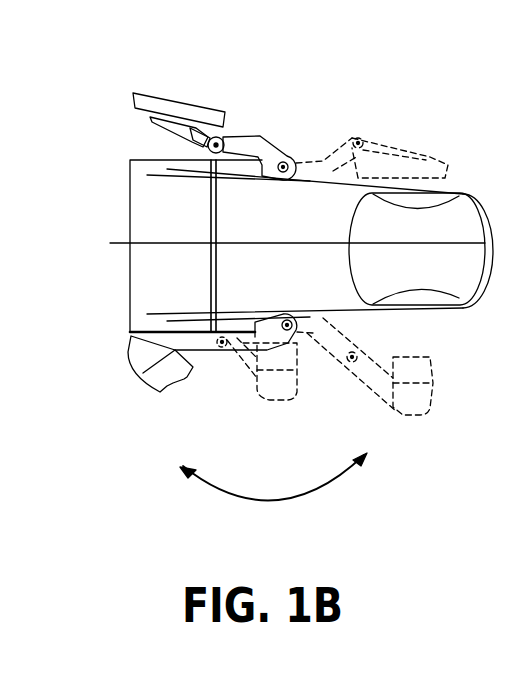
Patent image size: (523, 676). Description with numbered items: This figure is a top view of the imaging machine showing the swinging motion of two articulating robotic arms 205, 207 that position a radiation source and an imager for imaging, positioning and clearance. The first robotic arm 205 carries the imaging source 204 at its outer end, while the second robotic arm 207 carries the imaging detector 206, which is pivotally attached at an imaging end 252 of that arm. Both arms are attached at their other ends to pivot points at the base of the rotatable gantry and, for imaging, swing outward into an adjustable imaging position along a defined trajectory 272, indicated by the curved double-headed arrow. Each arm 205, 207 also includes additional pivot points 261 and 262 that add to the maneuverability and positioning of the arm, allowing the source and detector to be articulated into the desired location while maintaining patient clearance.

The imaging source 204 is at (142, 375).
The articulating robotic arm 205 is at (352, 362).
The imaging detector 206 is at (170, 97).
The articulating robotic arm 207 is at (260, 138).
The imaging end 252 is at (223, 115).
The pivot point 261 is at (207, 147).
The pivot point 262 is at (222, 137).
The defined trajectory 272 is at (255, 503).